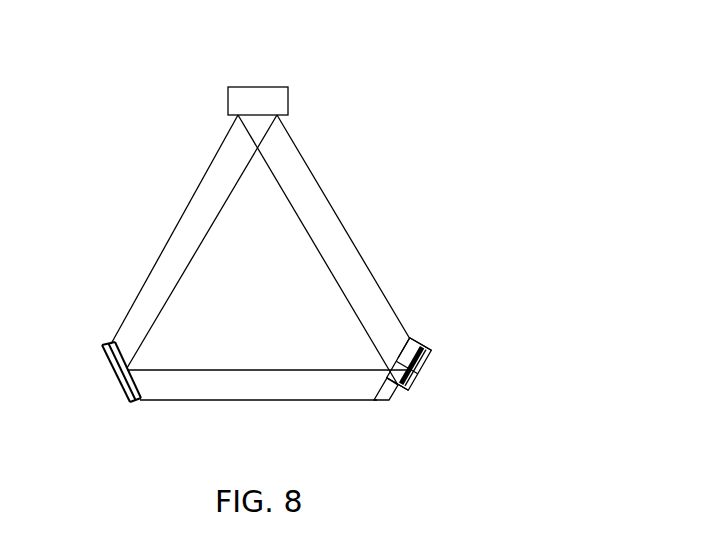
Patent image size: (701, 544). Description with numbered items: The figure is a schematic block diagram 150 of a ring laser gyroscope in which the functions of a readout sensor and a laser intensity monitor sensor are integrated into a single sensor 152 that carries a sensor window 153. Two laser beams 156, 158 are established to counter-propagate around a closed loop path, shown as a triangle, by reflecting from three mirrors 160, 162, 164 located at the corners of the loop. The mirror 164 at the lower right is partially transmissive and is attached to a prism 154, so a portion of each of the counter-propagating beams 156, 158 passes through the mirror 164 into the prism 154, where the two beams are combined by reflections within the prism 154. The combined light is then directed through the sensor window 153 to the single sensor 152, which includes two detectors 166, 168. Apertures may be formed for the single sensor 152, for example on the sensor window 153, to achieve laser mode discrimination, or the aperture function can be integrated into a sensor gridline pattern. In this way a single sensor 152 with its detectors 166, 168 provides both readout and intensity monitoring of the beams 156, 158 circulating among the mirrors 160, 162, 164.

The schematic block diagram 150 is at (404, 170).
The single sensor 152 is at (431, 355).
The sensor window 153 is at (429, 342).
The prism 154 is at (413, 338).
The laser beam 156 is at (173, 298).
The laser beam 158 is at (318, 250).
The mirror 160 is at (140, 383).
The mirror 162 is at (235, 118).
The mirror 164 is at (386, 382).
The detector 166 is at (426, 364).
The detector 168 is at (417, 390).